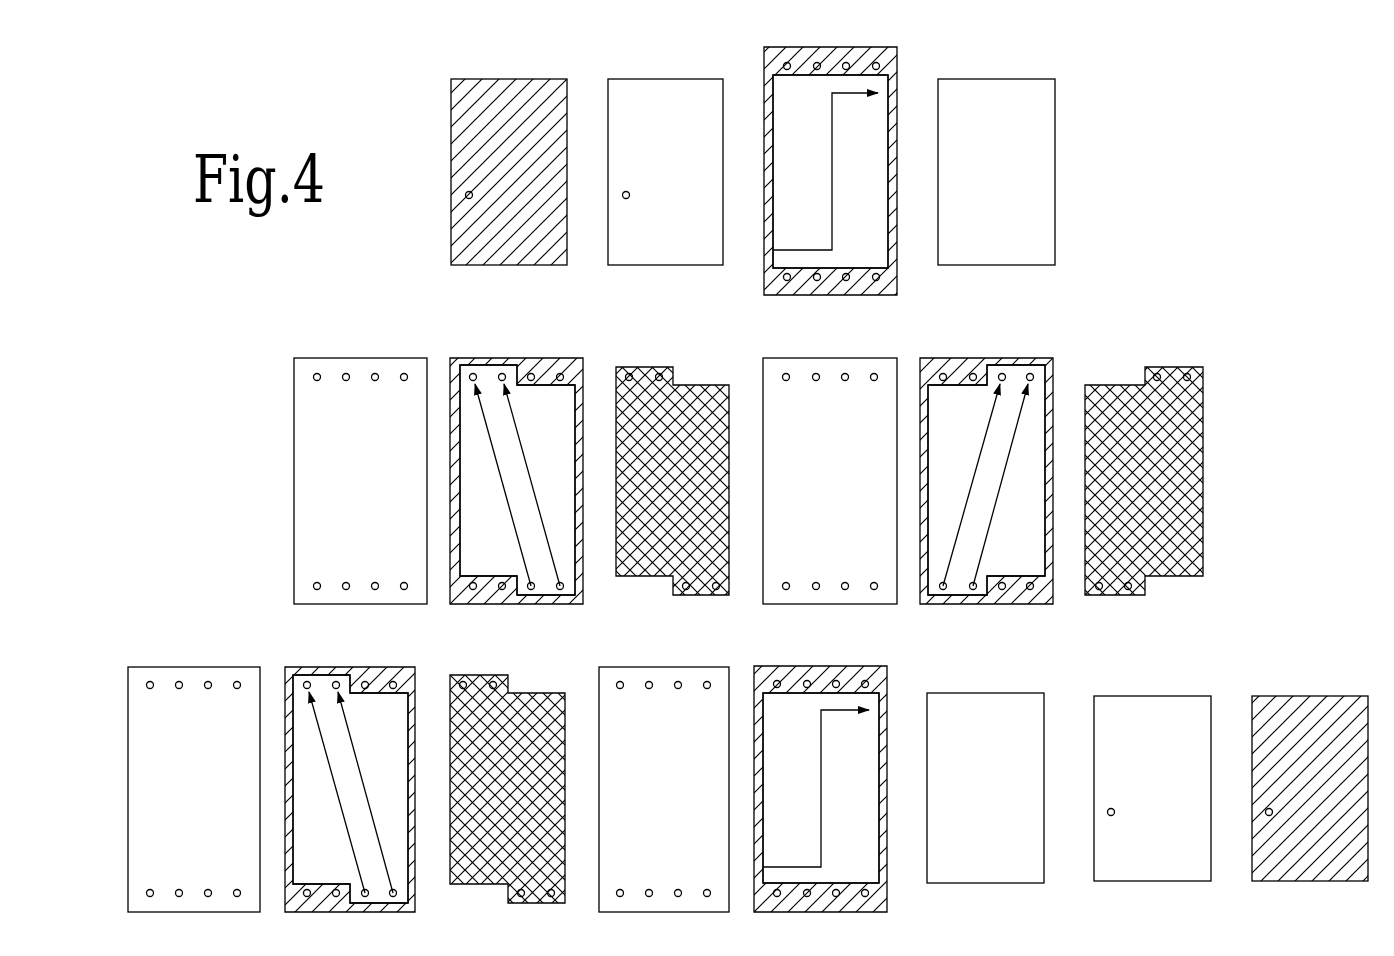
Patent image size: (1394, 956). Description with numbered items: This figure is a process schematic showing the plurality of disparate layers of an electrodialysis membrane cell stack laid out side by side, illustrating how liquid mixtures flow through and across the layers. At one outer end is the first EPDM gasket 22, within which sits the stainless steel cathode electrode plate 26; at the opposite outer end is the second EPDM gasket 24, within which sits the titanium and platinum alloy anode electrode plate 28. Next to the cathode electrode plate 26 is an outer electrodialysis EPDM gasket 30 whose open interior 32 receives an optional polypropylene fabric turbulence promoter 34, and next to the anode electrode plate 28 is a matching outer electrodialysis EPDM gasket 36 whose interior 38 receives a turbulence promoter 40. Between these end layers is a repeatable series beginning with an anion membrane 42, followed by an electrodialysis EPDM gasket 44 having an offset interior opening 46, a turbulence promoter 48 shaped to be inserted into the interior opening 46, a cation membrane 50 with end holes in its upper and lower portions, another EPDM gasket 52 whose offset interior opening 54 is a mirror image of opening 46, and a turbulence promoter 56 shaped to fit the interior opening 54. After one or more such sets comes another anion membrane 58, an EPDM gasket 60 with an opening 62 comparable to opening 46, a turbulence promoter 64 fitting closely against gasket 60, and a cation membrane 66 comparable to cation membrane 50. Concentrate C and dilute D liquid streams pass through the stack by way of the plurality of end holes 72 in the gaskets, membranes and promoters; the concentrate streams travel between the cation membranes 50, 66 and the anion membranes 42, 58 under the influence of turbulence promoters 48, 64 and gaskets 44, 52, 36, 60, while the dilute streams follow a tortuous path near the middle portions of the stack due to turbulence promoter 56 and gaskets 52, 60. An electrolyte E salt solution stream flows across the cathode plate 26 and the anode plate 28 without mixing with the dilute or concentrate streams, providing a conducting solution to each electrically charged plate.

The first EPDM gasket 22 is at (463, 91).
The second EPDM gasket 24 is at (1318, 720).
The cathode electrode plate 26 is at (626, 83).
The anode electrode plate 28 is at (1149, 708).
The outer electrodialysis EPDM gasket 30 is at (888, 58).
The interior 32 is at (782, 88).
The turbulence promoter 34 is at (1036, 92).
The outer electrodialysis EPDM gasket 36 is at (792, 680).
The interior 38 is at (840, 703).
The turbulence promoter 40 is at (1002, 710).
The anion membrane 42 is at (361, 375).
The electrodialysis EPDM gasket 44 is at (548, 363).
The offset interior opening 46 is at (492, 378).
The turbulence promoter 48 is at (648, 376).
The cation membrane 50 is at (831, 386).
The electrodialysis EPDM gasket 52 is at (960, 370).
The offset interior opening 54 is at (1016, 383).
The turbulence promoter 56 is at (1167, 372).
The anion membrane 58 is at (195, 685).
The EPDM gasket 60 is at (384, 681).
The opening 62 is at (327, 690).
The turbulence promoter 64 is at (525, 703).
The cation membrane 66 is at (661, 700).
The end holes 72 is at (876, 70).